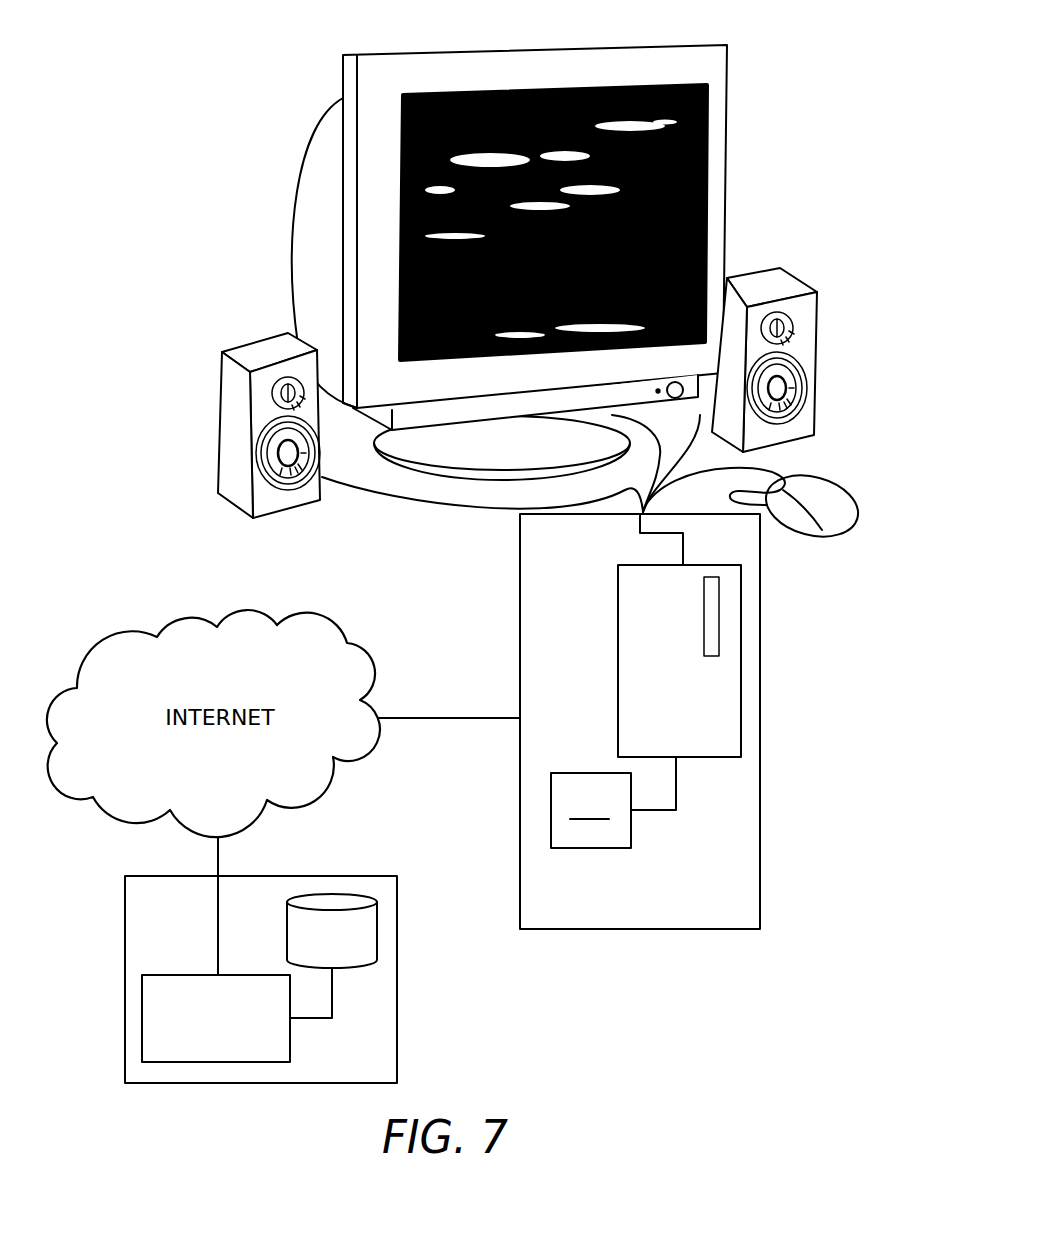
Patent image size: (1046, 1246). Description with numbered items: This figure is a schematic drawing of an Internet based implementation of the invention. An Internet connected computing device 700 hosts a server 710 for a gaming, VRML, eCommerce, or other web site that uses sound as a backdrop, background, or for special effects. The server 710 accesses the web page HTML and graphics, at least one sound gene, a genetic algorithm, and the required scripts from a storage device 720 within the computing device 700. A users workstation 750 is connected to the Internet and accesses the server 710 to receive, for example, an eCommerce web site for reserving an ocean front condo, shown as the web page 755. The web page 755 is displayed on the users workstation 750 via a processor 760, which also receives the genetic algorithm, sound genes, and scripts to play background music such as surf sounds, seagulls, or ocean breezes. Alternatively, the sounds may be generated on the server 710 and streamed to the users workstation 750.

The Internet connected computing device 700 is at (261, 979).
The server 710 is at (197, 1031).
The storage device 720 is at (313, 950).
The users workstation 750 is at (596, 721).
The web page 755 is at (400, 173).
The processor 760 is at (679, 661).